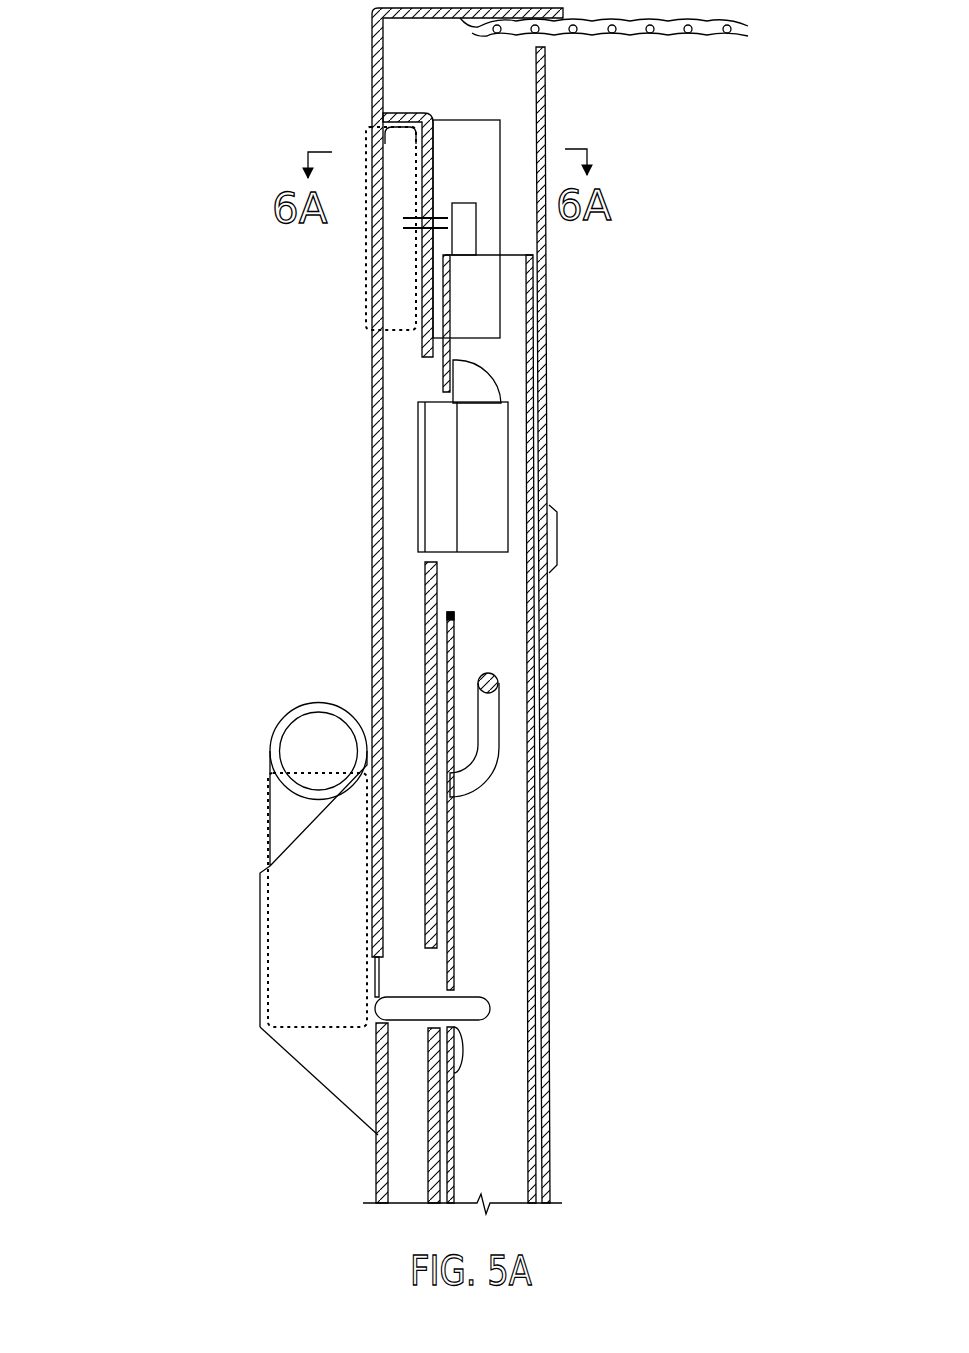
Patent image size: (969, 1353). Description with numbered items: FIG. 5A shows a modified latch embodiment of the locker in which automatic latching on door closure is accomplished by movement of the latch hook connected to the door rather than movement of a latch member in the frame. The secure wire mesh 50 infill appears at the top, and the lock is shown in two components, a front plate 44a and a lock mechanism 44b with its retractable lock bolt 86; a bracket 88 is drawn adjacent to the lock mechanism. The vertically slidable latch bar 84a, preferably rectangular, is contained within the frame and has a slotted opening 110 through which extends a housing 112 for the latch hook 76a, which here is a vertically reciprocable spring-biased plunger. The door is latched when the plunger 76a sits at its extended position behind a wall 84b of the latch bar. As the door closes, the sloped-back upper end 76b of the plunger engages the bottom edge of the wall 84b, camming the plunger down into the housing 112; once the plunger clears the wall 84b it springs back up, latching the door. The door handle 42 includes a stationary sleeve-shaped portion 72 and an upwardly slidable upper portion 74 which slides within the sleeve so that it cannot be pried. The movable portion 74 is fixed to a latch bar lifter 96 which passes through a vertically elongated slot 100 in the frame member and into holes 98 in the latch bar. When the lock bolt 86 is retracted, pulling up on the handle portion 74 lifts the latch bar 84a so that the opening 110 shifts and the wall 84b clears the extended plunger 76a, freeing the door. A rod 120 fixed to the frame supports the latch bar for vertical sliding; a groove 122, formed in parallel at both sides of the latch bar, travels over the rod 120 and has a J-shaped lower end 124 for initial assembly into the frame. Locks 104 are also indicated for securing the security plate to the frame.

The door handle 42 is at (232, 983).
The front plate 44a is at (365, 272).
The lock mechanism 44b is at (500, 137).
The wire mesh 50 is at (693, 33).
The stationary portion 72 is at (260, 925).
The upper portion 74 is at (262, 802).
The latch hook 76a is at (470, 393).
The sloped-back upper end 76b is at (498, 377).
The latch bar 84a is at (537, 958).
The wall 84b is at (443, 375).
The lock bolt 86 is at (476, 225).
The bracket 88 is at (470, 262).
The latch bar lifter 96 is at (491, 1008).
The holes 98 is at (460, 1070).
The vertically elongated slot 100 is at (433, 962).
The locks 104 is at (553, 541).
The slotted opening 110 is at (447, 592).
The housing 112 is at (510, 437).
The rod 120 is at (498, 683).
The groove 122 is at (500, 730).
The J-shaped lower end 124 is at (483, 787).